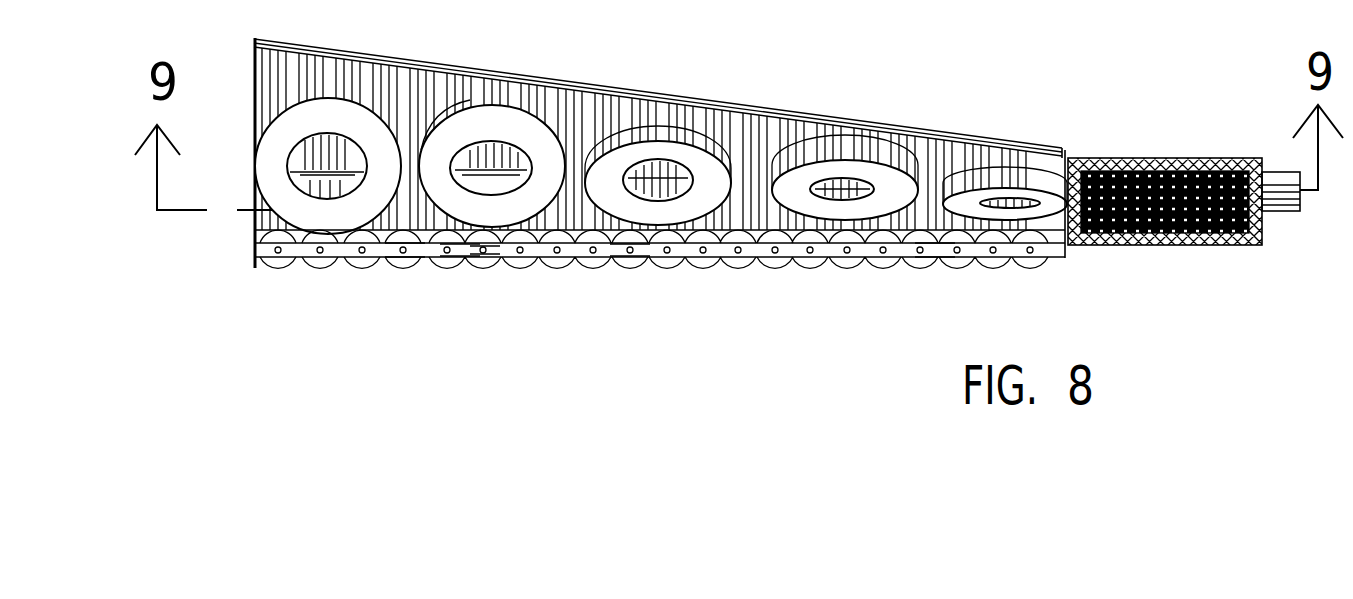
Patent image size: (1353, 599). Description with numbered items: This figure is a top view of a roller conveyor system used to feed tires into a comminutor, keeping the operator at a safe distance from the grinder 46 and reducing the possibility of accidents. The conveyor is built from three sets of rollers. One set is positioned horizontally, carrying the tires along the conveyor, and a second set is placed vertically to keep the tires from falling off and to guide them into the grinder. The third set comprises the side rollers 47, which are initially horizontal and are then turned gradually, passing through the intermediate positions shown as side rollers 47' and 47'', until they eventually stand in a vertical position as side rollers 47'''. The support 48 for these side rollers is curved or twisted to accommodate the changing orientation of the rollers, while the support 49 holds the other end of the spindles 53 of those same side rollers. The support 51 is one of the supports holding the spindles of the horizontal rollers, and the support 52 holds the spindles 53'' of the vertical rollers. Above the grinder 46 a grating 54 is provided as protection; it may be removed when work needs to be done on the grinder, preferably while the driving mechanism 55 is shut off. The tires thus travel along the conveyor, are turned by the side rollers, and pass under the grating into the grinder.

The grinder 46 is at (1138, 158).
The side rollers 47 is at (329, 116).
The side rollers 47' is at (551, 117).
The side rollers 47'' is at (810, 145).
The side rollers 47''' is at (1024, 152).
The support 48 is at (386, 60).
The support 49 is at (290, 160).
The support 51 is at (255, 254).
The support 52 is at (345, 264).
The spindles 53 is at (658, 82).
The spindles 53'' is at (505, 272).
The grating 54 is at (1217, 158).
The driving mechanism 55 is at (1277, 210).